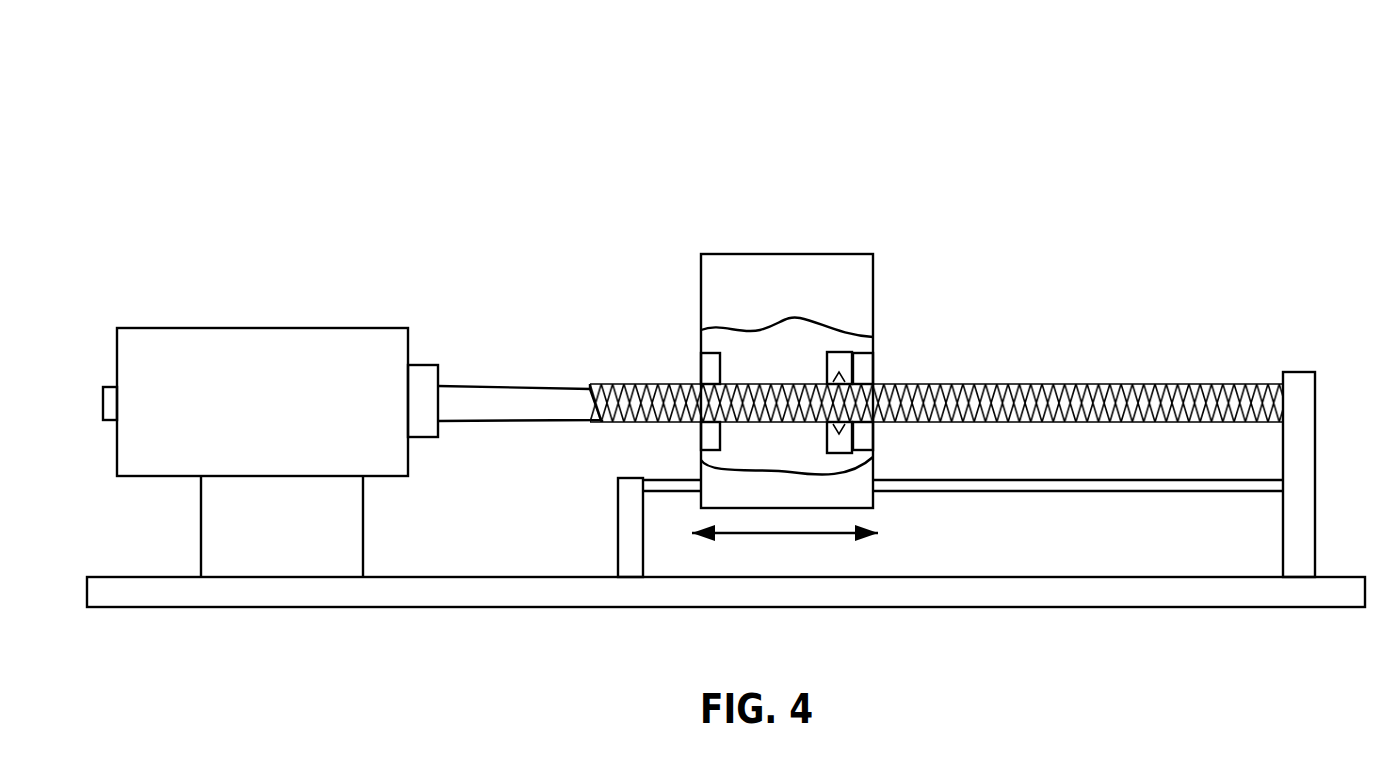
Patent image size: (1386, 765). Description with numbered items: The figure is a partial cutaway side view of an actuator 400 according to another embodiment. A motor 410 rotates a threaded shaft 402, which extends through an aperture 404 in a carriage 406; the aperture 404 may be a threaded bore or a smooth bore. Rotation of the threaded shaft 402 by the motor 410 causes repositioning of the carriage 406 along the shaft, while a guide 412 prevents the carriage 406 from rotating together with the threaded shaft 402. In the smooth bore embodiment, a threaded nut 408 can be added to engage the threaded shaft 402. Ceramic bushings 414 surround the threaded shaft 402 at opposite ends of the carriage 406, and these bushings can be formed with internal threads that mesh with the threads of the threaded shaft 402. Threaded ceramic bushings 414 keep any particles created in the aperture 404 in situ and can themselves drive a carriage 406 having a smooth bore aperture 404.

The actuator 400 is at (236, 216).
The threaded shaft 402 is at (462, 386).
The aperture 404 is at (781, 362).
The carriage 406 is at (830, 254).
The threaded nut 408 is at (840, 352).
The motor 410 is at (206, 328).
The guide 412 is at (1033, 490).
The ceramic bushings 414 is at (700, 370).